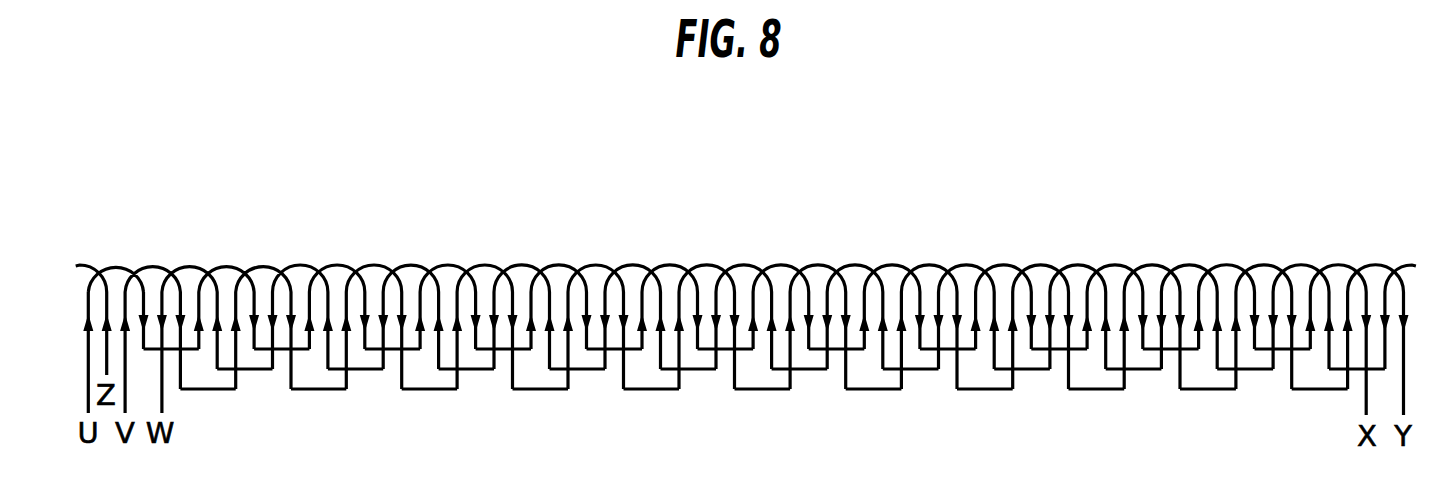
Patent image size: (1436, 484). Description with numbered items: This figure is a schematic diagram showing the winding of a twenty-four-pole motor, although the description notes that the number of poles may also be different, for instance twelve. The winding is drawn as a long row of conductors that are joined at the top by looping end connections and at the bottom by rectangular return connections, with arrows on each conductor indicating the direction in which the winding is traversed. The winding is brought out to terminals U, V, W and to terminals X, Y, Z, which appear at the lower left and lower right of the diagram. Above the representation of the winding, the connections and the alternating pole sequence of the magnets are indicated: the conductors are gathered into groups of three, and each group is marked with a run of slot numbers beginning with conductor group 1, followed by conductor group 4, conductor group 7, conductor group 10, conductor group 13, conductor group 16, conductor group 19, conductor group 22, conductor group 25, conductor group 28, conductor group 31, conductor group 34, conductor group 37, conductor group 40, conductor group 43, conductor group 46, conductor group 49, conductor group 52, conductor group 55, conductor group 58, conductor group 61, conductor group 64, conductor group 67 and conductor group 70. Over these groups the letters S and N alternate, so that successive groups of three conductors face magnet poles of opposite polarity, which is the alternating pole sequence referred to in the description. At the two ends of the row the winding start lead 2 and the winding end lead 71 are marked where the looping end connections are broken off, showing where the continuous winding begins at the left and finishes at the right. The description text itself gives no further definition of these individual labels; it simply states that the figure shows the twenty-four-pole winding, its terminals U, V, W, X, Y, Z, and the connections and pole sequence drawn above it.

The winding start lead (slot 2) 2 is at (89, 300).
The winding end lead (slot 71) 71 is at (1409, 297).
The slots 1-3 (S pole group) 1 is at (109, 260).
The slots 4-6 (N pole group) 4 is at (165, 288).
The slots 7-9 (S pole group) 7 is at (220, 248).
The slots 10-12 (N pole group) 10 is at (283, 276).
The slots 13-15 (S pole group) 13 is at (338, 248).
The slots 16-18 (N pole group) 16 is at (393, 276).
The slots 19-21 (S pole group) 19 is at (449, 248).
The slots 22-24 (N pole group) 22 is at (504, 276).
The slots 25-27 (S pole group) 25 is at (560, 248).
The slots 28-30 (N pole group) 28 is at (615, 276).
The slots 31-33 (S pole group) 31 is at (671, 248).
The slots 34-36 (N pole group) 34 is at (726, 276).
The slots 37-39 (S pole group) 37 is at (782, 248).
The slots 40-42 (N pole group) 40 is at (837, 276).
The slots 43-45 (S pole group) 43 is at (893, 248).
The slots 46-48 (N pole group) 46 is at (949, 276).
The slots 49-51 (S pole group) 49 is at (1004, 248).
The slots 52-54 (N pole group) 52 is at (1060, 276).
The slots 55-57 (S pole group) 55 is at (1116, 248).
The slots 58-60 (N pole group) 58 is at (1171, 276).
The slots 61-63 (S pole group) 61 is at (1227, 248).
The slots 64-66 (N pole group) 64 is at (1283, 276).
The slots 67-69 (S pole group) 67 is at (1339, 248).
The slots 70-72 (N pole group) 70 is at (1395, 289).